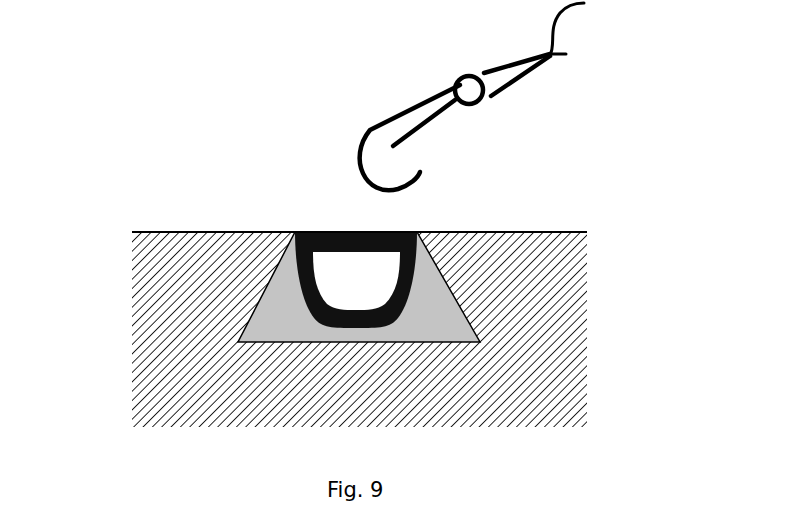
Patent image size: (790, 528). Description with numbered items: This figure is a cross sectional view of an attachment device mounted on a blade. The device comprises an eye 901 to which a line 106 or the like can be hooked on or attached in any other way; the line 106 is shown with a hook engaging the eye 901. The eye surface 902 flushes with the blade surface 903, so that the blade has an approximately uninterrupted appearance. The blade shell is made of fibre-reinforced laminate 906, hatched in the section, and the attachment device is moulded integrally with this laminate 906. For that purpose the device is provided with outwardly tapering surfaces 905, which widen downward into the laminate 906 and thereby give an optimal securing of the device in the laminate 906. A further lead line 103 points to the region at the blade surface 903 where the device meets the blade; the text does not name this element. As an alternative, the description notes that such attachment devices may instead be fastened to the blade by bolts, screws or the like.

The line 106 is at (522, 79).
The blade surface 903 is at (177, 232).
The substrate layer 103 is at (270, 232).
The eye surface 902 is at (340, 232).
The eye 901 is at (410, 232).
The outwardly tapering surfaces 905 is at (273, 282).
The laminate 906 is at (165, 355).